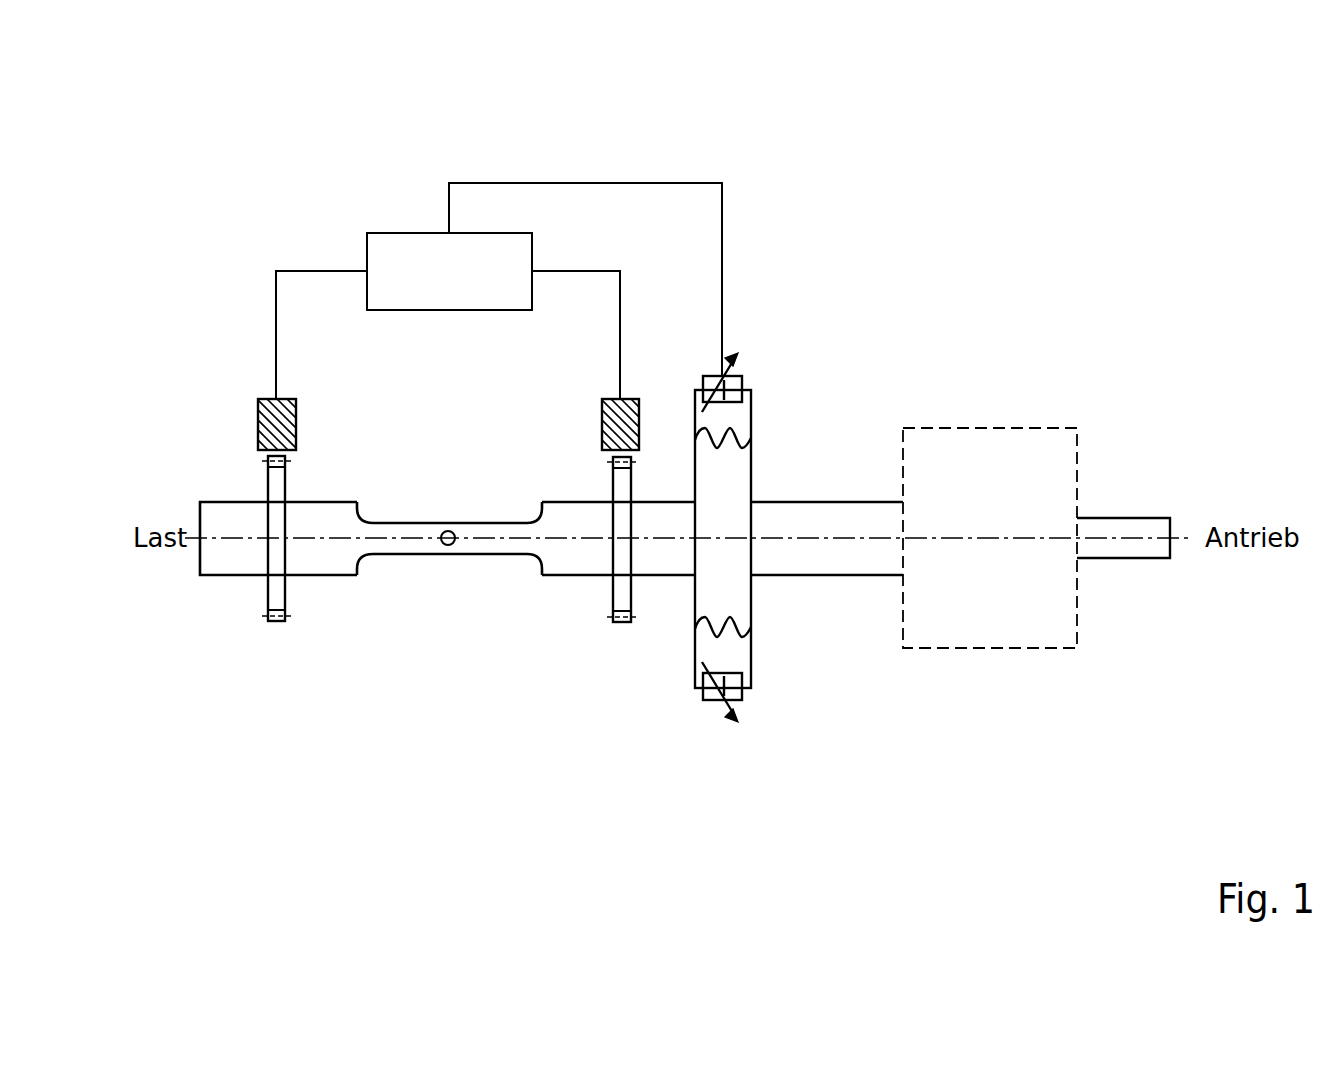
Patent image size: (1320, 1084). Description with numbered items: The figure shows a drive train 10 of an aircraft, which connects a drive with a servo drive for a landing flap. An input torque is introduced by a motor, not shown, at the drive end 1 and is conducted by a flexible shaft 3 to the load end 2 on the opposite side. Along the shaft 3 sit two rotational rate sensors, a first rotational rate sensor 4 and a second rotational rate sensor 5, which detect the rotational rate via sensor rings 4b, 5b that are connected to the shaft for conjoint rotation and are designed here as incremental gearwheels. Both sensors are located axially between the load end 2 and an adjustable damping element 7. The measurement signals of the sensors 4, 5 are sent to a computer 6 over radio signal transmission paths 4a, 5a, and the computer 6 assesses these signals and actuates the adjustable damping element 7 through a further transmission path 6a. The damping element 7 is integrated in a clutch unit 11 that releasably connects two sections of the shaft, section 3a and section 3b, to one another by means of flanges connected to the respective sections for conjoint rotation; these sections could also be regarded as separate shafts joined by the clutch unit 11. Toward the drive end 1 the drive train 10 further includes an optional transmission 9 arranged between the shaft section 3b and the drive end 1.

The drive end 1 is at (1132, 545).
The load end 2 is at (230, 557).
The flexible shaft 3 is at (448, 556).
The shaft section 3a is at (665, 578).
The shaft section 3b is at (825, 578).
The first rotational rate sensor 4 is at (275, 427).
The radio signal transmission path 4a is at (322, 271).
The sensor ring 4b is at (277, 487).
The second rotational rate sensor 5 is at (622, 425).
The radio signal transmission path 5a is at (575, 271).
The sensor ring 5b is at (622, 485).
The computer 6 is at (415, 262).
The transmission path 6a is at (490, 183).
The adjustable damping element 7 is at (768, 399).
The clutch unit 11 is at (727, 495).
The transmission 9 is at (980, 596).
The drive train 10 is at (903, 273).